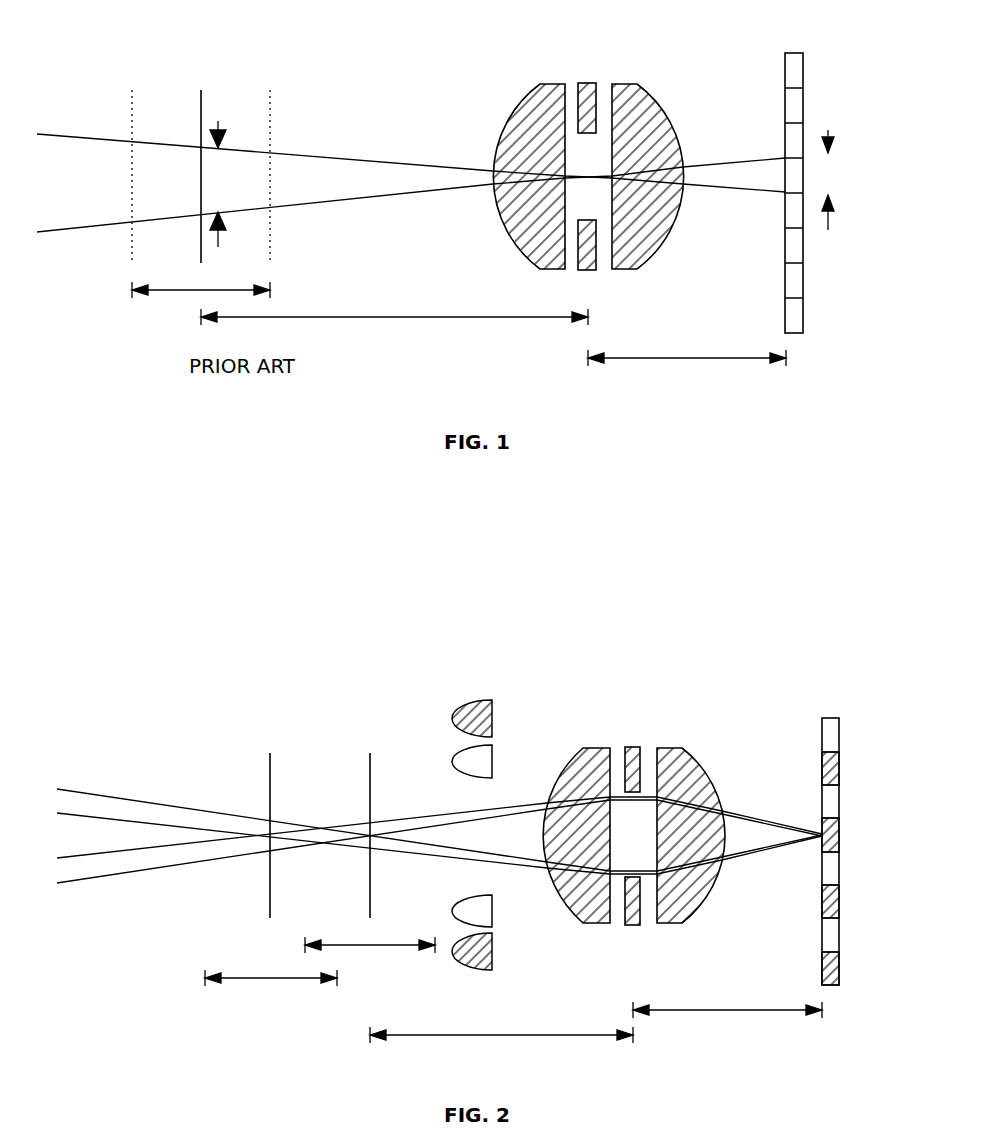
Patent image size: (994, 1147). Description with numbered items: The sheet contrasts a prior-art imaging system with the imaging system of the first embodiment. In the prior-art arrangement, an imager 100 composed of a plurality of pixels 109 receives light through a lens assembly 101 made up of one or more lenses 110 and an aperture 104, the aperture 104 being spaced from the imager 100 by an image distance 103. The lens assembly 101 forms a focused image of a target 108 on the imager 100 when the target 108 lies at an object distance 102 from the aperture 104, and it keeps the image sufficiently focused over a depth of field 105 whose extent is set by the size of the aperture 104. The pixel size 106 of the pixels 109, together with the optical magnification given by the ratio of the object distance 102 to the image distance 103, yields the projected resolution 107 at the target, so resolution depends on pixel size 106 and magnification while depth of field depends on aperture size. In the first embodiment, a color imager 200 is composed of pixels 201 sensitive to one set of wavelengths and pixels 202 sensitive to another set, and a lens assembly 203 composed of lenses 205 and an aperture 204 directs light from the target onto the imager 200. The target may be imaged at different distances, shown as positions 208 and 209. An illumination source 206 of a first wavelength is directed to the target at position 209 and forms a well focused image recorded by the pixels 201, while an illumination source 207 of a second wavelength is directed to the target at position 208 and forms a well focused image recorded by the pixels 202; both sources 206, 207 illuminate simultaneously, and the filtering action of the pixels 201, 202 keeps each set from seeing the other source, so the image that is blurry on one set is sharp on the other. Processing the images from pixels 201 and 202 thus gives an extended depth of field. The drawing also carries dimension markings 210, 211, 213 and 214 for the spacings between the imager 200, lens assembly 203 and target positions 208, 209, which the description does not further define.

In FIG. 1, the imager 100 is at (797, 166).
In FIG. 1, the lens assembly 101 is at (587, 157).
In FIG. 1, the object distance 102 is at (430, 319).
In FIG. 1, the image distance 103 is at (700, 359).
In FIG. 1, the aperture 104 is at (589, 83).
In FIG. 1, the depth of field 105 is at (183, 292).
In FIG. 1, the pixel size 106 is at (828, 130).
In FIG. 1, the projected resolution 107 is at (219, 121).
In FIG. 1, the target 108 is at (201, 95).
In FIG. 1, the pixels 109 is at (785, 107).
In FIG. 1, the lenses 110 is at (552, 257).
In FIG. 2, the color imager 200 is at (828, 819).
In FIG. 2, the pixels 201 is at (822, 768).
In FIG. 2, the pixels 202 is at (822, 802).
In FIG. 2, the lens assembly 203 is at (637, 816).
In FIG. 2, the aperture 204 is at (633, 745).
In FIG. 2, the lenses 205 is at (582, 903).
In FIG. 2, the illumination source 206 is at (477, 712).
In FIG. 2, the illumination source 207 is at (485, 762).
In FIG. 2, the target position 208 is at (370, 775).
In FIG. 2, the target position 209 is at (268, 775).
In FIG. 2, the image distance 210 is at (740, 1011).
In FIG. 2, the intermediate distance 211 is at (475, 1036).
In FIG. 2, the separation distance 213 is at (373, 946).
In FIG. 2, the separation distance 214 is at (273, 979).